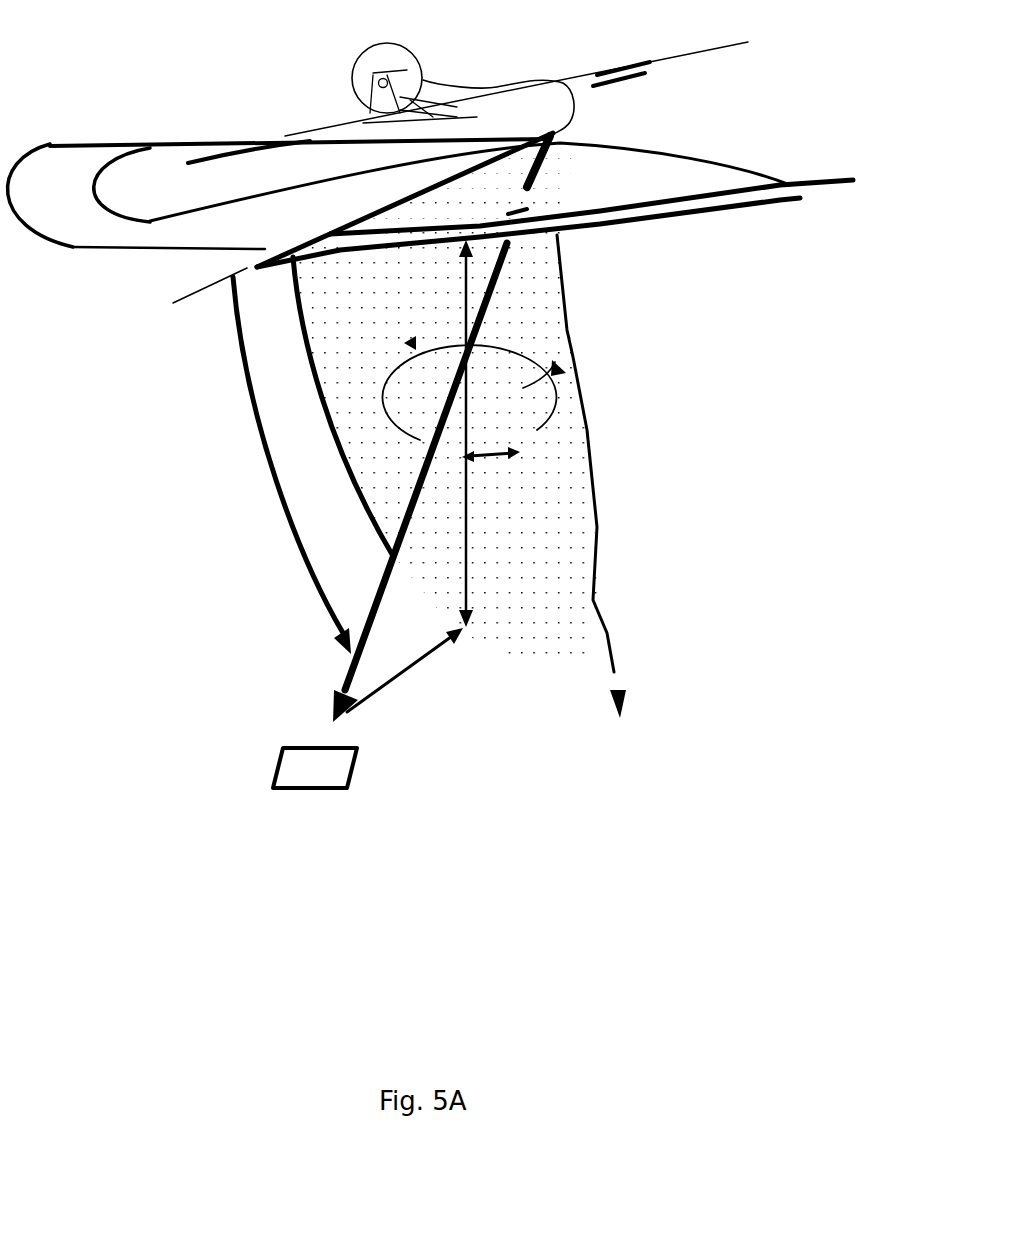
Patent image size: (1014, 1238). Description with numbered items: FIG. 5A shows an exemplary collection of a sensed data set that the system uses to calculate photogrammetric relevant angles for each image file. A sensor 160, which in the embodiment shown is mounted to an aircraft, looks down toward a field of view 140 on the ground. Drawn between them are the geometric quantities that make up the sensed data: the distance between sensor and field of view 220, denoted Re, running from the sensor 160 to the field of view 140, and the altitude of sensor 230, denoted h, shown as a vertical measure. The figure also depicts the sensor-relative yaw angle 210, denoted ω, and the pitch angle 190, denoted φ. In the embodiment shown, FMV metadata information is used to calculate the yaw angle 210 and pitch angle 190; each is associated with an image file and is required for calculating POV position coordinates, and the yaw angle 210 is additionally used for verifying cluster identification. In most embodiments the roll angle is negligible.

The field of view 140 is at (297, 770).
The sensor 160 is at (545, 138).
The pitch angle (φ) 190 is at (266, 468).
The yaw angle (ω) 210 is at (706, 196).
The distance between sensor and field of view (Re) 220 is at (372, 603).
The altitude of sensor (h) 230 is at (472, 534).